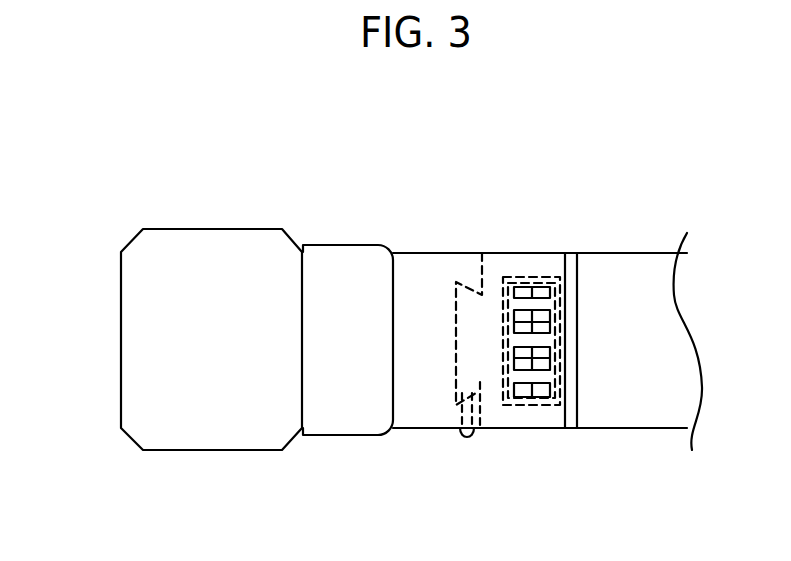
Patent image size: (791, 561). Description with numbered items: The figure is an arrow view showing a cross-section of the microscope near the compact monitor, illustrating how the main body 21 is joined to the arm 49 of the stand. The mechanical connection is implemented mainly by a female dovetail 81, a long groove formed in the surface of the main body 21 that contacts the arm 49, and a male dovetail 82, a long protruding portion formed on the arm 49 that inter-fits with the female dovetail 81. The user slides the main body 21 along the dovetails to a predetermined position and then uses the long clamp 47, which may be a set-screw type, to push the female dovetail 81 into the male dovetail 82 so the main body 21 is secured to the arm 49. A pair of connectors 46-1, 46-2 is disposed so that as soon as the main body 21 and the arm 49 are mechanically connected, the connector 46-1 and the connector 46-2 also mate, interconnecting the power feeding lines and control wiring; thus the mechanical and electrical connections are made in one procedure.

The main body 21 is at (165, 338).
The female dovetail 81 is at (452, 325).
The connector 46-1 is at (508, 317).
The connector 46-2 is at (540, 277).
The clamp 47 is at (467, 437).
The male dovetail 82 is at (467, 378).
The arm 49 is at (633, 402).